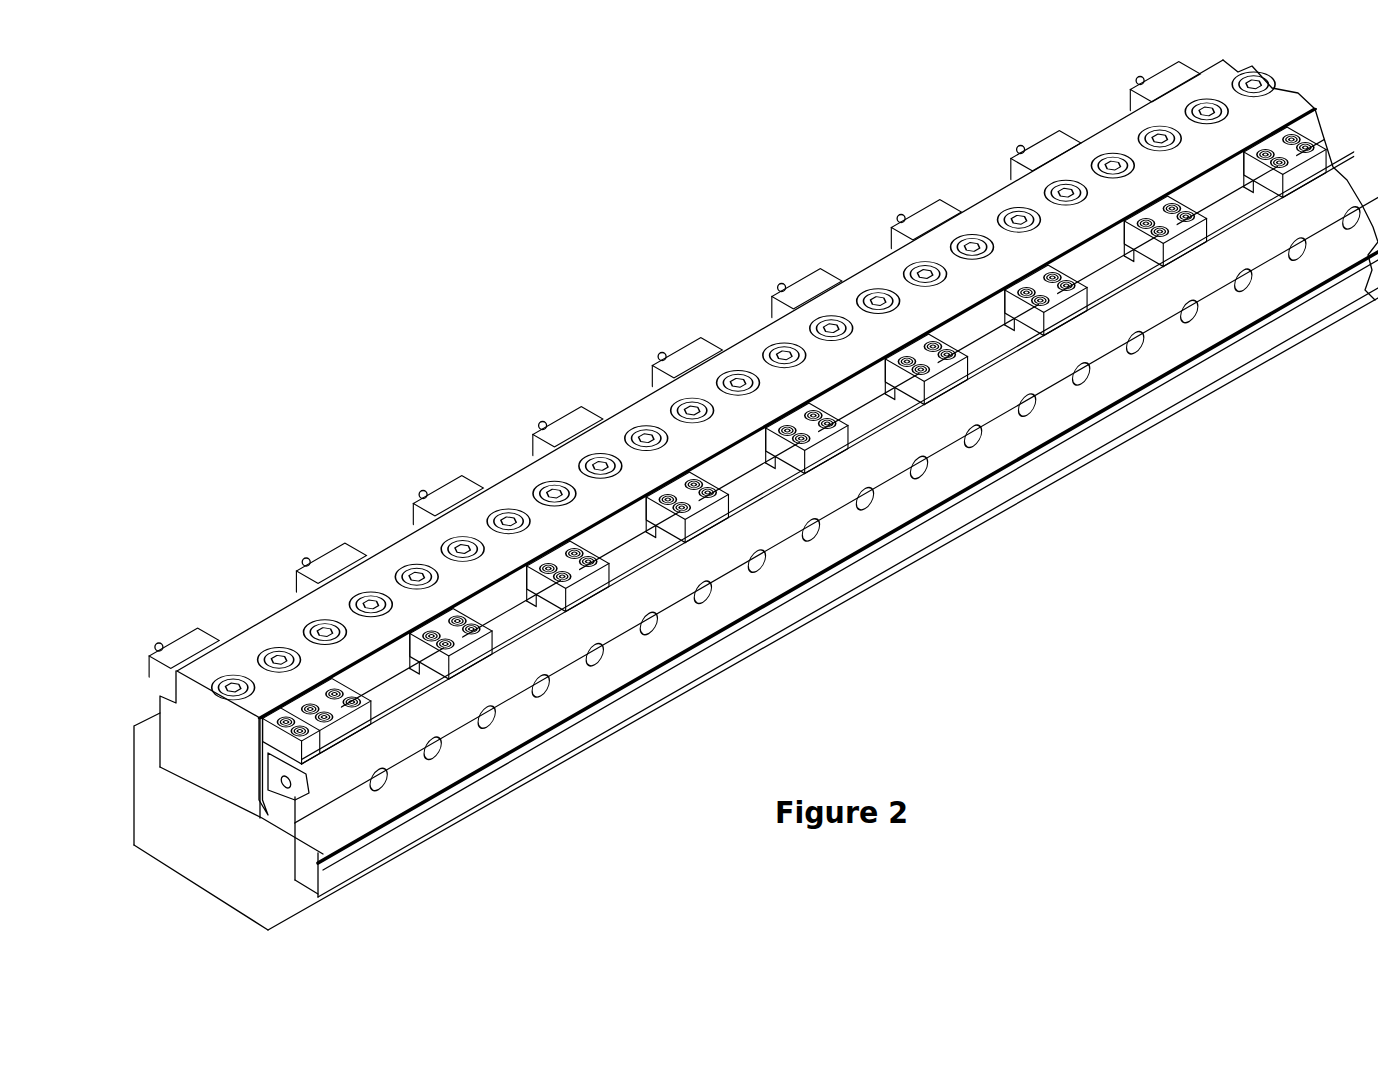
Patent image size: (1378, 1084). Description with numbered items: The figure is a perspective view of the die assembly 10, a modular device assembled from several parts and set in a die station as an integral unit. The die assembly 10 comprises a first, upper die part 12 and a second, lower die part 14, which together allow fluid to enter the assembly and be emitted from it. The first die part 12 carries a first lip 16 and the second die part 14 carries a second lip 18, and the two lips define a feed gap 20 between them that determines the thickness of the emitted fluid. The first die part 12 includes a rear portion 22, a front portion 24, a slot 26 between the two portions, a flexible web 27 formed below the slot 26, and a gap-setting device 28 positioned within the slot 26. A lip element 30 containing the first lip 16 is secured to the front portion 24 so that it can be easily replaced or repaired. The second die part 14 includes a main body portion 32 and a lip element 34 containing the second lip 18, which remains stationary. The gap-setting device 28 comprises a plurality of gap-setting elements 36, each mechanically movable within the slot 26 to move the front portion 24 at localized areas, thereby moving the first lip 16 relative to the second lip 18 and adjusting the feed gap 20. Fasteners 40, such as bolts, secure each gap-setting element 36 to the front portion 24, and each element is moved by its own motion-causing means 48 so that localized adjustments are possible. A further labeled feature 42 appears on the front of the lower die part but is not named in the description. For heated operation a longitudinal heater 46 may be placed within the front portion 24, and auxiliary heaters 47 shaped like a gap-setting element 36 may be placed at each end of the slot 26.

The die assembly 10 is at (404, 458).
The first die part 12 is at (162, 711).
The second die part 14 is at (140, 810).
The first lip 16 is at (380, 845).
The second lip 18 is at (325, 872).
The feed gap 20 is at (335, 847).
The rear portion 22 is at (207, 702).
The front portion 24 is at (290, 832).
The slot 26 is at (280, 783).
The flexible web 27 is at (292, 805).
The gap-setting device 28 is at (664, 472).
The lip element 30 is at (345, 832).
The main body portion 32 is at (167, 866).
The lip element 34 is at (310, 880).
The gap-setting elements 36 is at (1152, 214).
The fasteners 40 is at (612, 556).
The front wall 42 is at (517, 673).
The longitudinal heater 46 is at (182, 853).
The auxiliary heaters 47 is at (268, 745).
The motion-causing means 48 is at (300, 566).